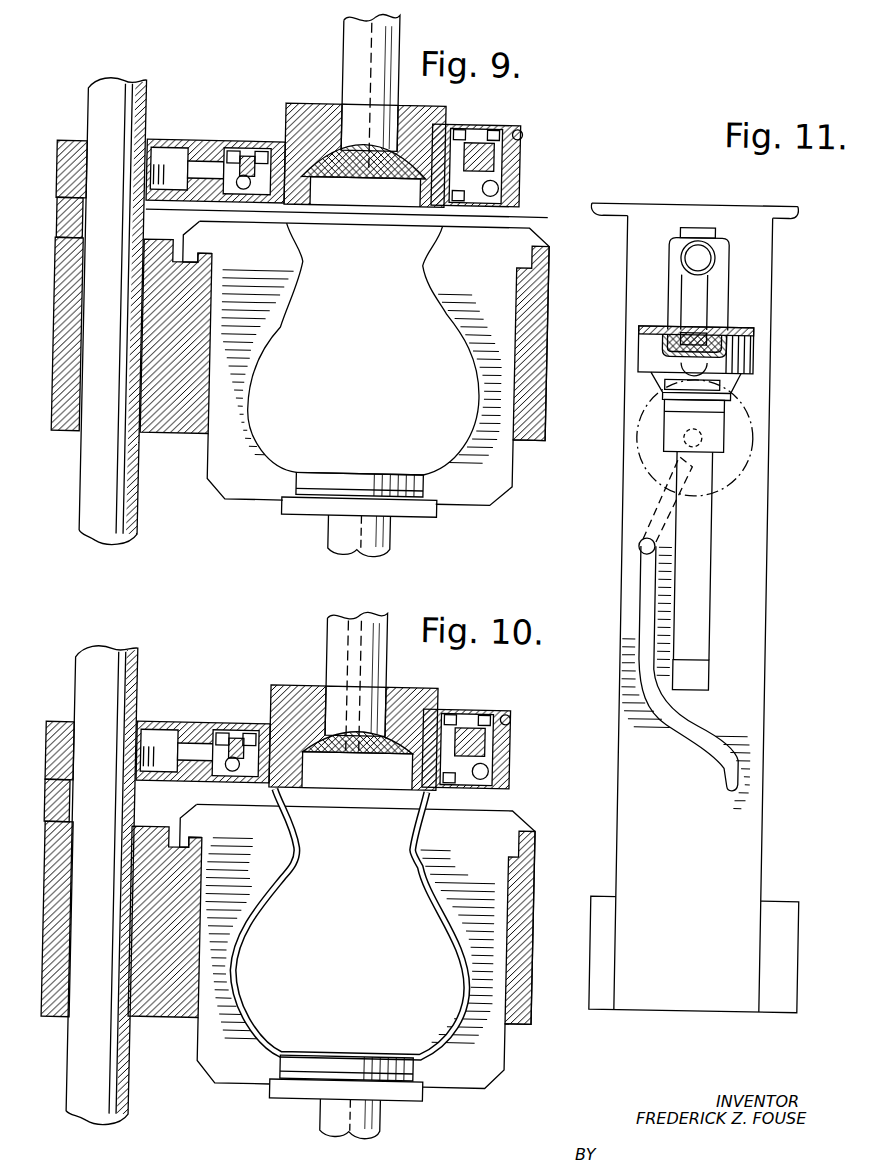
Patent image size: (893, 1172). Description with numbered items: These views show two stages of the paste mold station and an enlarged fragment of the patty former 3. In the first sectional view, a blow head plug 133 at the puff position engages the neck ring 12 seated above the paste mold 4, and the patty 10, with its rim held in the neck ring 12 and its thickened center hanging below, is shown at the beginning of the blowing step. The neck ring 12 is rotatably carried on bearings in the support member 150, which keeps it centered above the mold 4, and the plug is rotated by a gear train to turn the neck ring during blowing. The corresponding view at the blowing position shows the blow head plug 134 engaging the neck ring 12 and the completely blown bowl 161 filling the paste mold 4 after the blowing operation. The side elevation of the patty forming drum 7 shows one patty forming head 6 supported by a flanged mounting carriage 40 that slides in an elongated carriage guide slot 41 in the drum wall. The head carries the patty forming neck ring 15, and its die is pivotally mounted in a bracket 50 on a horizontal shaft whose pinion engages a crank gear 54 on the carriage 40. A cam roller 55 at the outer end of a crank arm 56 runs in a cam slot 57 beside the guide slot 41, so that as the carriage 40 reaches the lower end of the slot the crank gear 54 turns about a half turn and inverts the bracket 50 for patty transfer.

In FIG. 9, the blow head plug 133 is at (354, 57).
In FIG. 9, the support member 150 is at (149, 145).
In FIG. 9, the patty 10 is at (364, 161).
In FIG. 11, the patty 10 is at (700, 338).
In FIG. 9, the neck ring 12 is at (523, 156).
In FIG. 10, the neck ring 12 is at (507, 744).
In FIG. 9, the paste mold 4 is at (533, 221).
In FIG. 10, the paste mold 4 is at (532, 816).
In FIG. 10, the blow head plug 134 is at (425, 686).
In FIG. 10, the bowl 161 is at (419, 879).
In FIG. 11, the patty former 3 is at (728, 204).
In FIG. 11, the mounting carriage 40 is at (709, 285).
In FIG. 11, the patty forming neck ring 15 is at (745, 330).
In FIG. 11, the bracket 50 is at (751, 358).
In FIG. 11, the patty forming head 6 is at (629, 373).
In FIG. 11, the crank gear 54 is at (752, 434).
In FIG. 11, the crank arm 56 is at (755, 479).
In FIG. 11, the carriage guide slot 41 is at (709, 536).
In FIG. 11, the cam roller 55 is at (654, 549).
In FIG. 11, the cam slot 57 is at (675, 670).
In FIG. 11, the patty forming drum 7 is at (744, 617).